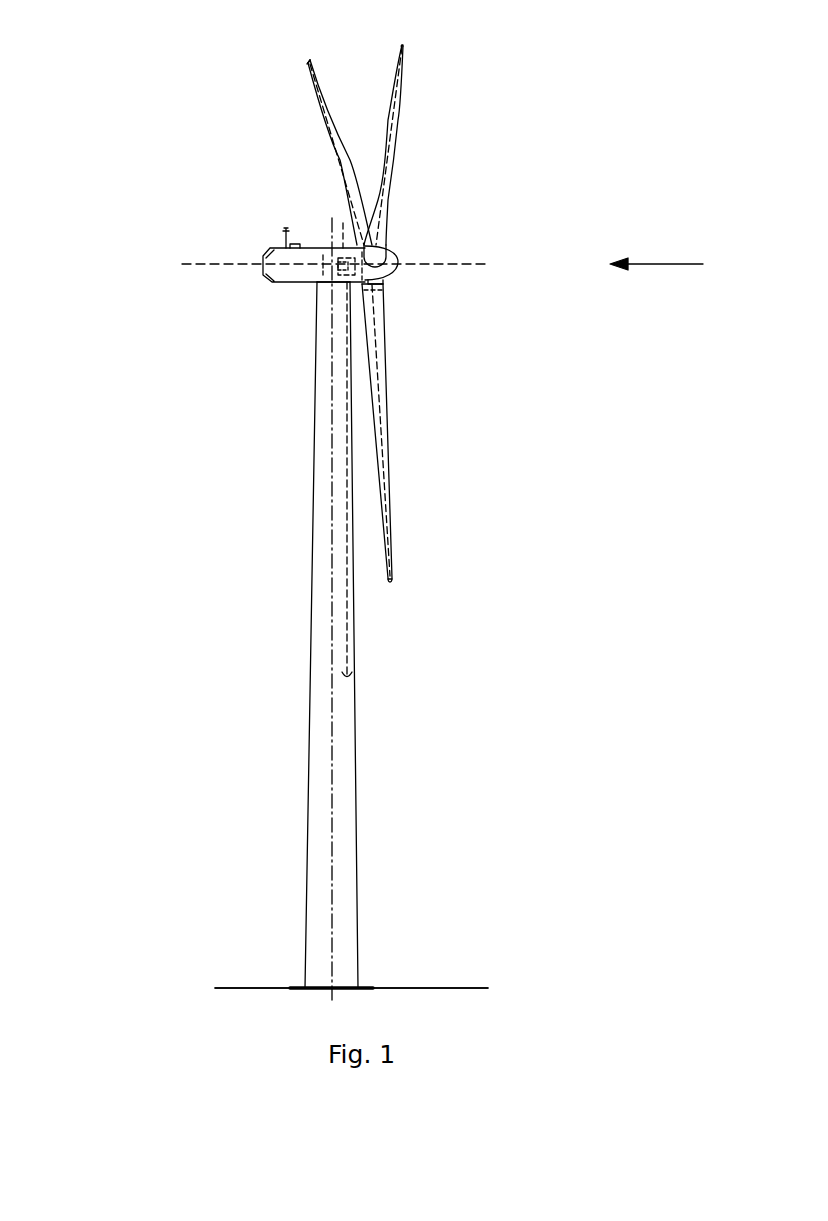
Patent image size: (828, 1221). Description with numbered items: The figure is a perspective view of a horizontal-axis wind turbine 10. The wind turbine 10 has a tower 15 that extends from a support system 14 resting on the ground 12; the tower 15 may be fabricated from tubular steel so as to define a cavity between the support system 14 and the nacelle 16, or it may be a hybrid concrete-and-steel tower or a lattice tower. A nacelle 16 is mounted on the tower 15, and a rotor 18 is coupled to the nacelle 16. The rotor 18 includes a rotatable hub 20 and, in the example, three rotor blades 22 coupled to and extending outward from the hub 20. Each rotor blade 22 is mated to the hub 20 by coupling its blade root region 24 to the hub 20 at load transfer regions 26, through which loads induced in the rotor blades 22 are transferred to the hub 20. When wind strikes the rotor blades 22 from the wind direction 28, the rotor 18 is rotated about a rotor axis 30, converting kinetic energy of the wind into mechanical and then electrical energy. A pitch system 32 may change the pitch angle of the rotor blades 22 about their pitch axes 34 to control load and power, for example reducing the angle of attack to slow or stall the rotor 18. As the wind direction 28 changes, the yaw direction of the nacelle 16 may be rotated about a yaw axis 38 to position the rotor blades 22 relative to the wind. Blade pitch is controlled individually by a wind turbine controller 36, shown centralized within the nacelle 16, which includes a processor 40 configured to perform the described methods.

The wind turbine 10 is at (111, 68).
The ground 12 is at (238, 988).
The support system 14 is at (297, 988).
The tower 15 is at (325, 613).
The nacelle 16 is at (290, 283).
The rotor 18 is at (405, 174).
The rotatable hub 20 is at (395, 262).
The rotor blade 22 is at (325, 126).
The blade root region 24 is at (382, 362).
The load transfer region 26 is at (368, 282).
The wind direction 28 is at (672, 264).
The rotor axis 30 is at (455, 265).
The pitch system 32 is at (350, 296).
The pitch axis 34 is at (308, 64).
The wind turbine controller 36 is at (340, 288).
The yaw axis 38 is at (363, 670).
The processor 40 is at (343, 223).